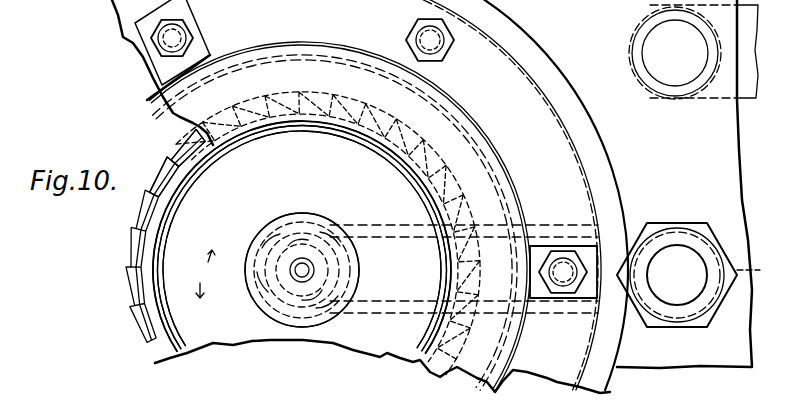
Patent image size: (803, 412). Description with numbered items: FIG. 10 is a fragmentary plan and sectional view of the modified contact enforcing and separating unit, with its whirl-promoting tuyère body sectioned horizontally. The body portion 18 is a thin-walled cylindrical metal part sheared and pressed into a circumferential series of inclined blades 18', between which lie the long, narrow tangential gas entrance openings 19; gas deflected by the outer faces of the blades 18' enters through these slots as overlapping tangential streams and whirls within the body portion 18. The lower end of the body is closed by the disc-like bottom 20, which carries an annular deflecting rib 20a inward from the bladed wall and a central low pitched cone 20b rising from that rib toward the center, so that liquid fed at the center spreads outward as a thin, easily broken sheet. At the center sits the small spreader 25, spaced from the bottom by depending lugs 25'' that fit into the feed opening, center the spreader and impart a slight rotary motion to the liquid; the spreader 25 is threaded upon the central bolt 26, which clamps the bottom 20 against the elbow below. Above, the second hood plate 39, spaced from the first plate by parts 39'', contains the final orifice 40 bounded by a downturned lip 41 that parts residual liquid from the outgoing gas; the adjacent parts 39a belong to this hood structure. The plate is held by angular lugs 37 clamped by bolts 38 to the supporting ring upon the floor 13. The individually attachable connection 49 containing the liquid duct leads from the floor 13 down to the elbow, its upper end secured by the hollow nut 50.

The floor 13 is at (586, 195).
The body portion 18 is at (152, 235).
The blades 18' is at (175, 156).
The tangential gas entrance openings 19 is at (172, 191).
The bottom-closing part 20 is at (361, 196).
The annular deflecting rib 20a is at (165, 252).
The low pitched cone 20b is at (214, 274).
The spreader 25 is at (311, 266).
The depending lugs 25'' is at (295, 264).
The central bolt 26 is at (305, 270).
The angular lugs 37 is at (204, 41).
The bolts 38 is at (562, 289).
The second hood plate 39 is at (328, 233).
The ring flange 39a is at (503, 160).
The spacing parts 39'' is at (361, 202).
The final orifice 40 is at (318, 122).
The downturned lip 41 is at (372, 130).
The individually attachable connection 49 is at (637, 224).
The hollow nut 50 is at (690, 228).